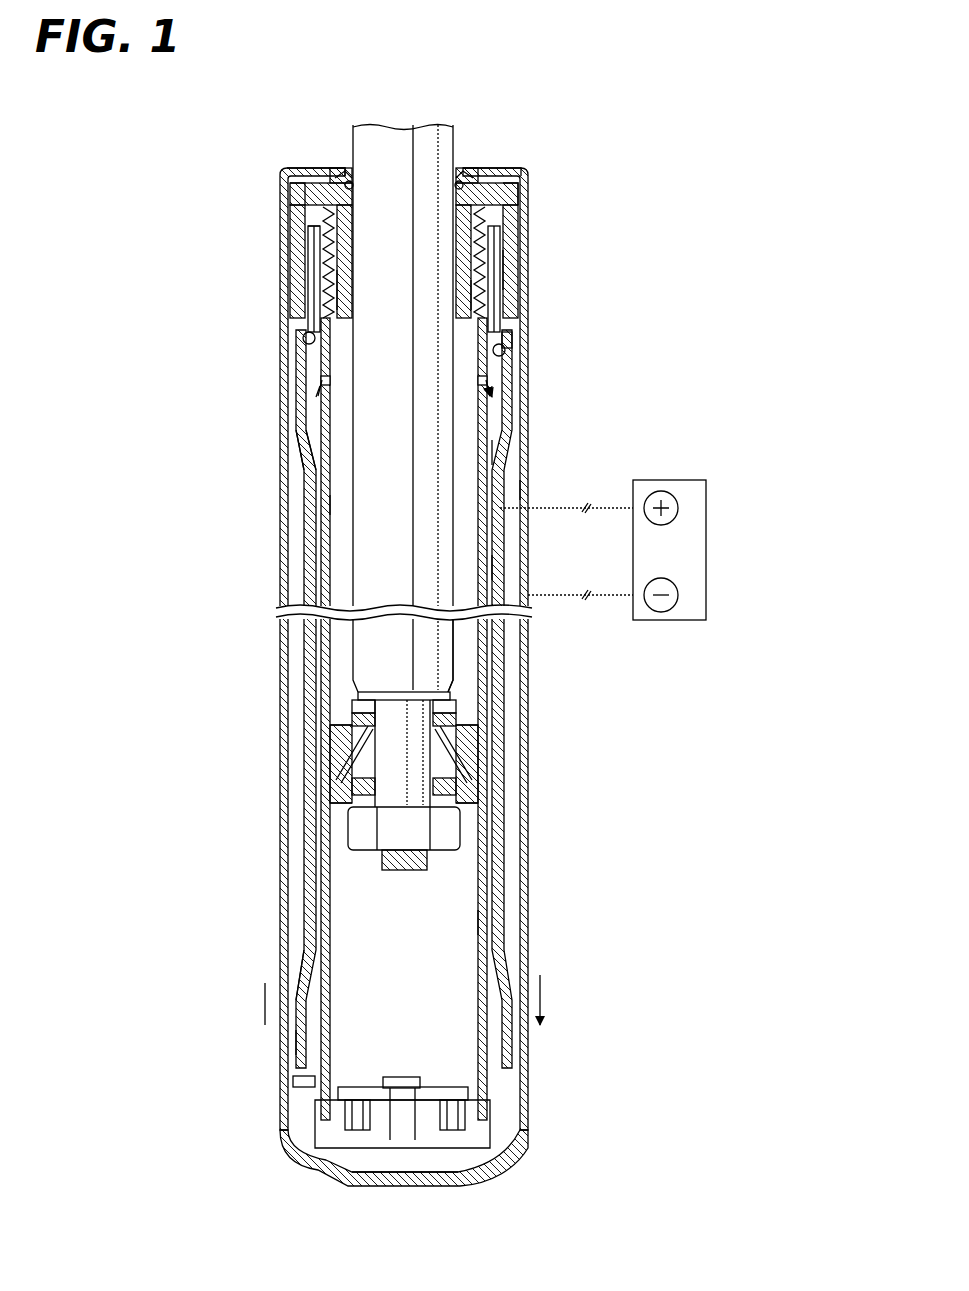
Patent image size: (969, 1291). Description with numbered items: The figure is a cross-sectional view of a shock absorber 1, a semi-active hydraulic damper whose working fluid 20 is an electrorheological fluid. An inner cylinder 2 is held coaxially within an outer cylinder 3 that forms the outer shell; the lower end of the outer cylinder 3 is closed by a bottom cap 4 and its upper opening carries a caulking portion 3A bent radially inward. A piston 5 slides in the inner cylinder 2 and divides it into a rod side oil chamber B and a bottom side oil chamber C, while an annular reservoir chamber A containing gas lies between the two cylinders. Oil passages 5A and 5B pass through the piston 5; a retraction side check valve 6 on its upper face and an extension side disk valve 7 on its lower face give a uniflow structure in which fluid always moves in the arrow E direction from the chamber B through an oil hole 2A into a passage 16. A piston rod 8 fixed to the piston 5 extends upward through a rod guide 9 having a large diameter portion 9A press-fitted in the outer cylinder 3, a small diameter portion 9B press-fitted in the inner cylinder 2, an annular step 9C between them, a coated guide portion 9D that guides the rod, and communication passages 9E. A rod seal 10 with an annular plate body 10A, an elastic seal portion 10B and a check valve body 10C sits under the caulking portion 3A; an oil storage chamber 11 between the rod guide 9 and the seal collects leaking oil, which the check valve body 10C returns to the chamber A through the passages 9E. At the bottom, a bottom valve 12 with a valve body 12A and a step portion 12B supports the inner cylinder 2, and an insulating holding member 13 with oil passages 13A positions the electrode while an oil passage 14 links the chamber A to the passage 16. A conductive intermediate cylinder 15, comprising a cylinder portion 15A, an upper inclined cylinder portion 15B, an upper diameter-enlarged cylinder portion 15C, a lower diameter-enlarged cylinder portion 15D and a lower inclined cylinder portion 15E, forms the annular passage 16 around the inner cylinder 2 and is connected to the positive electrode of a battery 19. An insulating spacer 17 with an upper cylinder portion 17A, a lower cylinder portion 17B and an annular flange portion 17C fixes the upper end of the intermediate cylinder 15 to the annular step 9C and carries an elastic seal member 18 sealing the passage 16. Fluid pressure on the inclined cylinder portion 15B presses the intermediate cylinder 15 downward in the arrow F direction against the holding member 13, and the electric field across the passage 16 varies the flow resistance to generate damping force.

The shock absorber 1 is at (150, 290).
The inner cylinder 2 is at (323, 588).
The oil hole 2A is at (320, 380).
The outer cylinder 3 is at (282, 885).
The caulking portion 3A is at (525, 172).
The bottom cap 4 is at (500, 1170).
The piston 5 is at (338, 765).
The oil passages 5A is at (345, 786).
The oil passages 5B is at (462, 770).
The retraction side check valve 6 is at (358, 706).
The disk valve 7 is at (458, 832).
The piston rod 8 is at (370, 565).
The rod guide 9 is at (520, 232).
The large diameter portion 9A is at (296, 204).
The small diameter portion 9B is at (505, 295).
The annular step 9C is at (507, 268).
The guide portion 9D is at (340, 290).
The communication passages 9E is at (512, 212).
The rod seal 10 is at (462, 176).
The annular plate body 10A is at (340, 176).
The elastic seal portion 10B is at (348, 178).
The check valve body 10C is at (470, 182).
The oil storage chamber 11 is at (330, 214).
The bottom valve 12 is at (432, 1088).
The valve body 12A is at (466, 1120).
The step portion 12B is at (345, 1120).
The holding member 13 is at (472, 1094).
The oil passages 13A is at (300, 1080).
The oil passage 14 is at (360, 1163).
The intermediate cylinder 15 is at (307, 640).
The cylinder portion 15A is at (505, 565).
The inclined cylinder portion 15B is at (505, 455).
The upper diameter-enlarged cylinder portion 15C is at (515, 345).
The lower diameter-enlarged cylinder portion 15D is at (303, 1040).
The inclined cylinder portion 15E is at (304, 957).
The passage 16 is at (303, 445).
The spacer 17 is at (312, 313).
The upper cylinder portion 17A is at (312, 240).
The lower cylinder portion 17B is at (305, 336).
The annular flange portion 17C is at (500, 325).
The elastic seal member 18 is at (503, 355).
The battery 19 is at (683, 480).
The working fluid 20 is at (462, 655).
The reservoir chamber A is at (500, 490).
The rod side oil chamber B is at (345, 505).
The bottom side oil chamber C is at (450, 922).
The arrow E direction E is at (404, 379).
The arrow F direction F is at (400, 1000).